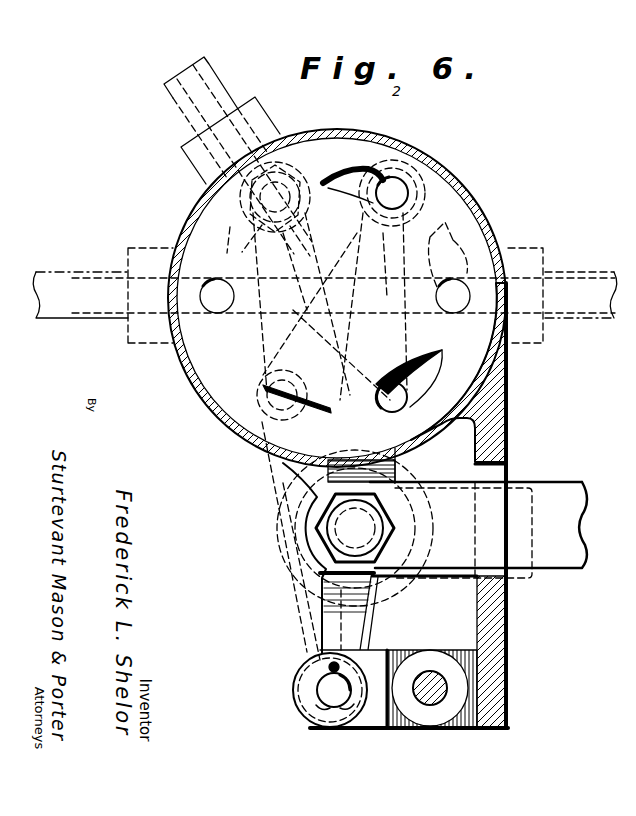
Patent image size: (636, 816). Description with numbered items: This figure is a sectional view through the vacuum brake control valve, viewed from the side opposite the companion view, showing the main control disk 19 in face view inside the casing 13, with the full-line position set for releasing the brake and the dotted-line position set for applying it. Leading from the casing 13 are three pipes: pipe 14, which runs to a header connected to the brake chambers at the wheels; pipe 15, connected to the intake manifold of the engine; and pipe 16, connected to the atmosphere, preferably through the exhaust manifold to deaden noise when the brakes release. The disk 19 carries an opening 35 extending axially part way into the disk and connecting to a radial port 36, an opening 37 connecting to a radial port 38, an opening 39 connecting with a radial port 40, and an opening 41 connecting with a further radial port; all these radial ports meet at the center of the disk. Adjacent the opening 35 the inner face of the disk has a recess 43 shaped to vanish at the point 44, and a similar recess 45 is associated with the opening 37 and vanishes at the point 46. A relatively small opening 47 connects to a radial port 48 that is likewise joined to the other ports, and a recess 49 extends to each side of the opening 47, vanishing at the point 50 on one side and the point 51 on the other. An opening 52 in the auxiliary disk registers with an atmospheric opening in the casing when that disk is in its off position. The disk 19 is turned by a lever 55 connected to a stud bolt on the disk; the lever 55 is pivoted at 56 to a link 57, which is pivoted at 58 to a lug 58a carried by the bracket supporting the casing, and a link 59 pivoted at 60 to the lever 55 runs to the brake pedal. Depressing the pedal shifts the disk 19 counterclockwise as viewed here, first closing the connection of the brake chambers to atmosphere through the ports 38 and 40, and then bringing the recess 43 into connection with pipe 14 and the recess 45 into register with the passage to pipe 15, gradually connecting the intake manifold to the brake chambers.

The casing 13 is at (198, 385).
The pipe 14 is at (598, 316).
The pipe 15 is at (220, 60).
The pipe 16 is at (68, 287).
The main control disk 19 is at (228, 384).
The opening 35 is at (412, 406).
The radial port 36 is at (404, 343).
The opening 37 is at (396, 190).
The radial port 38 is at (300, 205).
The opening 39 is at (457, 297).
The radial port 40 is at (430, 243).
The opening 41 is at (208, 306).
The recess 43 is at (412, 398).
The vanishing point 44 is at (442, 350).
The recess 45 is at (372, 178).
The vanishing point 46 is at (321, 178).
The small opening 47 is at (238, 395).
The radial port 48 is at (268, 388).
The recess 49 is at (284, 382).
The vanishing point 50 is at (287, 407).
The vanishing point 51 is at (232, 392).
The opening 52 is at (410, 470).
The lever 55 is at (338, 605).
The pivot 56 is at (332, 688).
The link 57 is at (300, 702).
The pivot 58 is at (432, 675).
The lug 58a is at (478, 655).
The link 59 is at (549, 485).
The pivot 60 is at (350, 512).